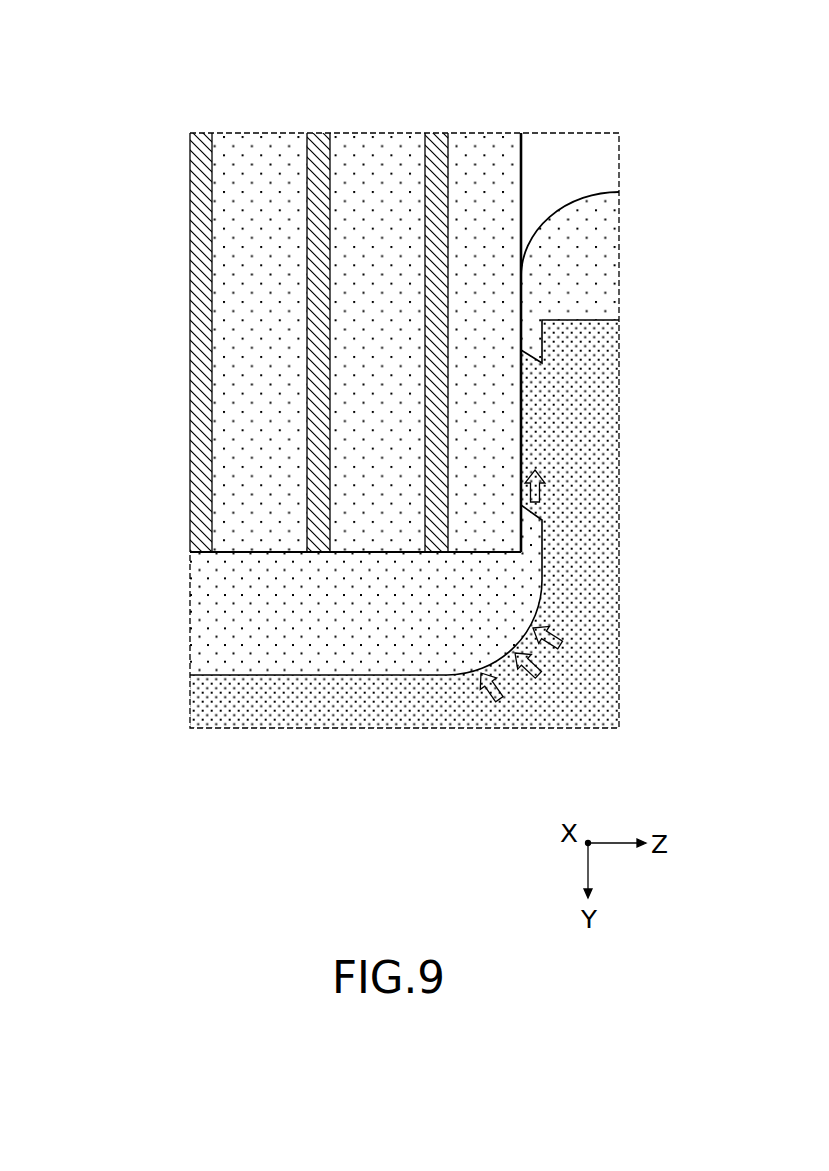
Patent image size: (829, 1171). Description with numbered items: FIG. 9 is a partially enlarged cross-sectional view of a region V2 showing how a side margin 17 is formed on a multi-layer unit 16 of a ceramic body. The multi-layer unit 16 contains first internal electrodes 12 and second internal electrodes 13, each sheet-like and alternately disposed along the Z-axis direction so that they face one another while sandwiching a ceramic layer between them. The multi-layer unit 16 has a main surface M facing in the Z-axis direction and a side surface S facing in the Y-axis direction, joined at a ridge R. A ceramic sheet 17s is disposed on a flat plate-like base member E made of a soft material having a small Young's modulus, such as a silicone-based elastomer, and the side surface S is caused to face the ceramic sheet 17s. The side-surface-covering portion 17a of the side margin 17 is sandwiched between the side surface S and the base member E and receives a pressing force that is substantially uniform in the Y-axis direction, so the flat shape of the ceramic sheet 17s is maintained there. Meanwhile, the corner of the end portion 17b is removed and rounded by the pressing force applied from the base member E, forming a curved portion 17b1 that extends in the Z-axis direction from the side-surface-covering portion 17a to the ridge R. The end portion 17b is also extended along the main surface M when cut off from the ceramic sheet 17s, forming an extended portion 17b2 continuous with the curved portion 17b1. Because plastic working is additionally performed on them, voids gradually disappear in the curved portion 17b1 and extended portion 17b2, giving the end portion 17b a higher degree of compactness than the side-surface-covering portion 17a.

The first internal electrode 12 is at (203, 148).
The second internal electrode 13 is at (321, 148).
The multi-layer unit 16 is at (355, 281).
The side margin 17 is at (384, 469).
The side-surface-covering portion 17a is at (282, 709).
The end portion 17b is at (520, 709).
The curved portion 17b1 is at (520, 611).
The extended portion 17b2 is at (531, 531).
The ceramic sheet 17s is at (590, 252).
The main surface M is at (522, 164).
The region V2 is at (557, 133).
The base member E is at (592, 458).
The ridge R is at (523, 554).
The side surface S is at (260, 553).